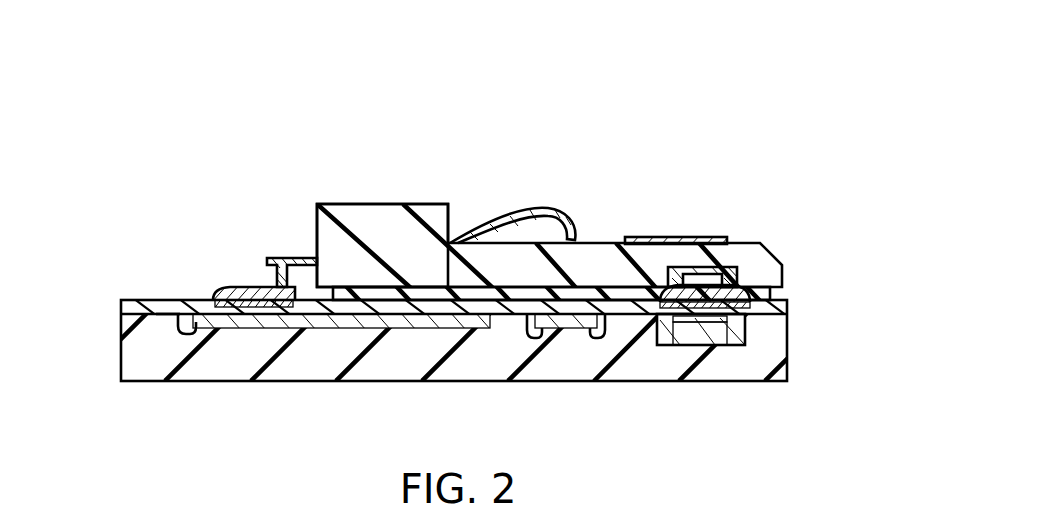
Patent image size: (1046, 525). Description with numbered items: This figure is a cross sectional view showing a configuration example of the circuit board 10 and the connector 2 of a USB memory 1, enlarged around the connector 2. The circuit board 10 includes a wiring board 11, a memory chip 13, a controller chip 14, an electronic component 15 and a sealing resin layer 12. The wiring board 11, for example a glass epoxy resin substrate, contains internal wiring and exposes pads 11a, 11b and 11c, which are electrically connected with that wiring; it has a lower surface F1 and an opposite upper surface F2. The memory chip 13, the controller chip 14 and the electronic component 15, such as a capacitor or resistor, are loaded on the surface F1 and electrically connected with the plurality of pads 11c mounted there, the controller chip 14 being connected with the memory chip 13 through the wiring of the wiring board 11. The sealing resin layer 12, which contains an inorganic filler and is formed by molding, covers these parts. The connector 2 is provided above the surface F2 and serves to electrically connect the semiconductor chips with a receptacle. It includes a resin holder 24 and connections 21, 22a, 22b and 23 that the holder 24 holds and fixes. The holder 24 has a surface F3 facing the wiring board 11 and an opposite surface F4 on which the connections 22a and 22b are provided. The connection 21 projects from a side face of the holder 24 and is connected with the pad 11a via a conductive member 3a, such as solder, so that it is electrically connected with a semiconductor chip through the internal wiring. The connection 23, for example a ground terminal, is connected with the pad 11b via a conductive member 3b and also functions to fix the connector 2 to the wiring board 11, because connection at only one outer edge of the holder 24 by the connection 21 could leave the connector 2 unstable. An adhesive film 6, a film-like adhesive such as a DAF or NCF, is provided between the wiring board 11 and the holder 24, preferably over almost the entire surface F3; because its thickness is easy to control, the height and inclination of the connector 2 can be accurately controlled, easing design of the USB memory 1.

The USB memory 1 is at (687, 91).
The connector 2 is at (653, 138).
The connection 21 is at (282, 260).
The connection 22a is at (529, 213).
The connection 22b is at (688, 266).
The connection 23 is at (700, 288).
The holder 24 is at (404, 224).
The conductive member 3a is at (233, 290).
The conductive member 3b is at (703, 292).
The adhesive film 6 is at (449, 294).
The circuit board 10 is at (459, 306).
The wiring board 11 is at (155, 305).
The pad 11a is at (210, 302).
The pad 11b is at (745, 302).
The pad 11c is at (168, 316).
The sealing resin layer 12 is at (227, 340).
The memory chip 13 is at (307, 322).
The controller chip 14 is at (563, 322).
The electronic component 15 is at (700, 334).
The surface F1 is at (777, 315).
The surface F2 is at (792, 298).
The surface F3 is at (785, 286).
The surface F4 is at (774, 238).